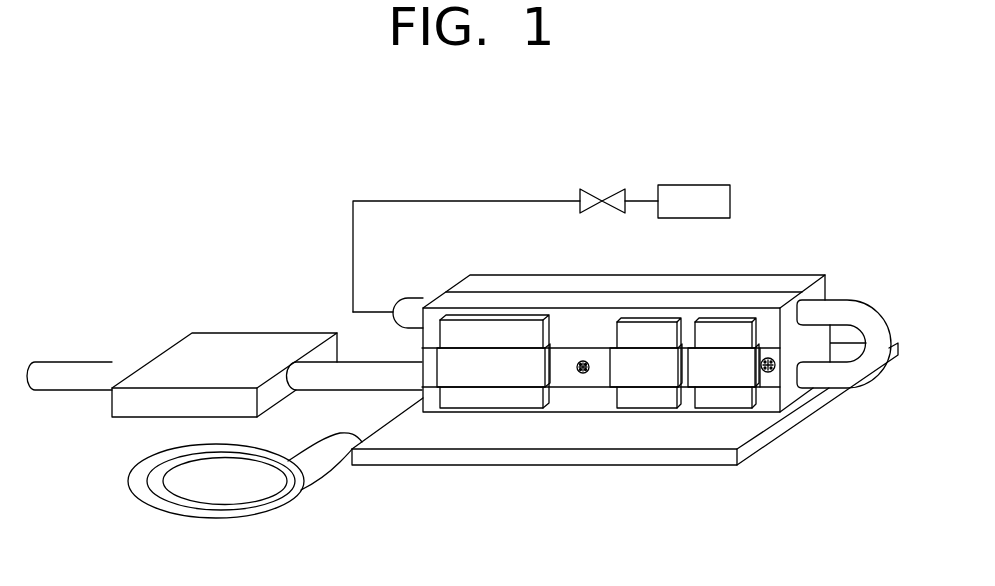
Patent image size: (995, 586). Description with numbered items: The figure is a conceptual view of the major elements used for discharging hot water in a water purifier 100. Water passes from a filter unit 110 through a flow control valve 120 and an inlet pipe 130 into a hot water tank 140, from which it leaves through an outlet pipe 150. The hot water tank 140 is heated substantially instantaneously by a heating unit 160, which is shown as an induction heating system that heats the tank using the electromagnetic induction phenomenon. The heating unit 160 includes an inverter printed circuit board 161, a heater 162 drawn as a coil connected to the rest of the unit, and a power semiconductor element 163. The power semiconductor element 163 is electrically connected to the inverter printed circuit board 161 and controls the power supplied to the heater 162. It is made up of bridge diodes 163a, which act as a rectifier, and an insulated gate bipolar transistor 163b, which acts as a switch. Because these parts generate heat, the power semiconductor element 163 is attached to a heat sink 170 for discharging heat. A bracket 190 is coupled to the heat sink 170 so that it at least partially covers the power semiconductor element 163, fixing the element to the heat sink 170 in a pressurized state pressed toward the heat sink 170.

The water purifier 100 is at (390, 171).
The filter unit 110 is at (692, 185).
The flow control valve 120 is at (602, 197).
The inlet pipe 130 is at (415, 298).
The hot water tank 140 is at (232, 352).
The outlet pipe 150 is at (87, 368).
The heating unit 160 is at (400, 486).
The inverter printed circuit board 161 is at (742, 430).
The heater 162 is at (293, 488).
The power semiconductor element 163 is at (530, 513).
The bridge diodes 163a is at (497, 393).
The insulated gate bipolar transistor 163b is at (710, 395).
The heat sink 170 is at (498, 300).
The bracket 190 is at (475, 372).